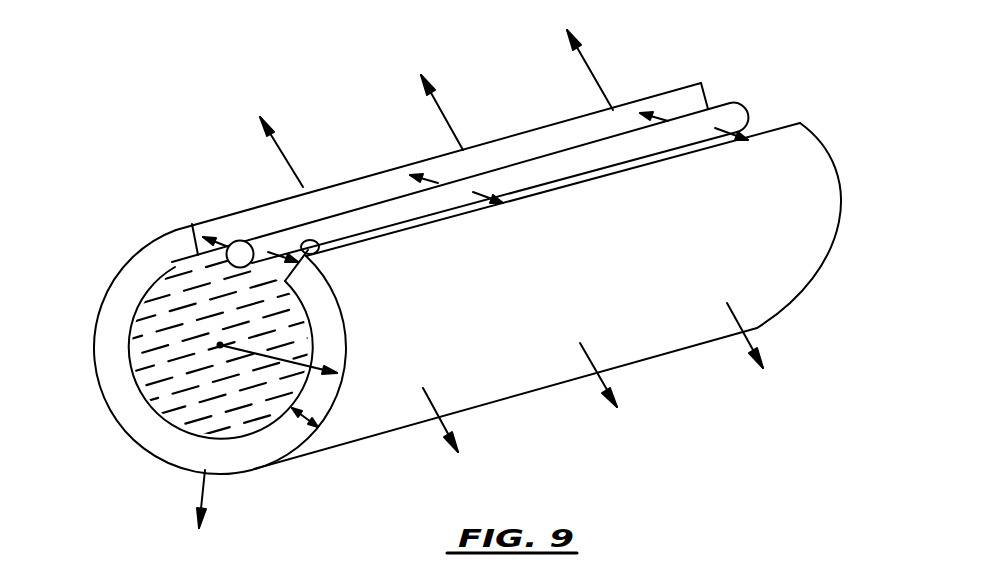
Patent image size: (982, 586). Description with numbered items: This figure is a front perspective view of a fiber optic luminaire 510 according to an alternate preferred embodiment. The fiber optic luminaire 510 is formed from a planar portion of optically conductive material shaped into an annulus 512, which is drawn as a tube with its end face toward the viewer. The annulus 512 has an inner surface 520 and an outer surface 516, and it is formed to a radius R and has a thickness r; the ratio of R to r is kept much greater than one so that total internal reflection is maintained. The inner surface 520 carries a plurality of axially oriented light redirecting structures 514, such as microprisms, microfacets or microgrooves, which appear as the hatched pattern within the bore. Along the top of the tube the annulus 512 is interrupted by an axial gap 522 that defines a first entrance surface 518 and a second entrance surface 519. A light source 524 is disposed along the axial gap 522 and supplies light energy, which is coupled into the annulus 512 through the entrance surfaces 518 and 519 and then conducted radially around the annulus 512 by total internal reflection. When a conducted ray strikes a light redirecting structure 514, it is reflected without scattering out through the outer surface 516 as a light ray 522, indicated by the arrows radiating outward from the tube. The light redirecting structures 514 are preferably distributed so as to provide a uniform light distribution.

The fiber optic luminaire 510 is at (673, 370).
The annulus 512 is at (118, 402).
The light redirecting structures 514 is at (163, 398).
The outer surface 516 is at (374, 432).
The first entrance surface 518 is at (690, 97).
The second entrance surface 519 is at (322, 245).
The inner surface 520 is at (233, 433).
The axial gap 522 is at (280, 147).
The light source 524 is at (741, 104).
The radius R is at (339, 370).
The thickness r is at (314, 422).